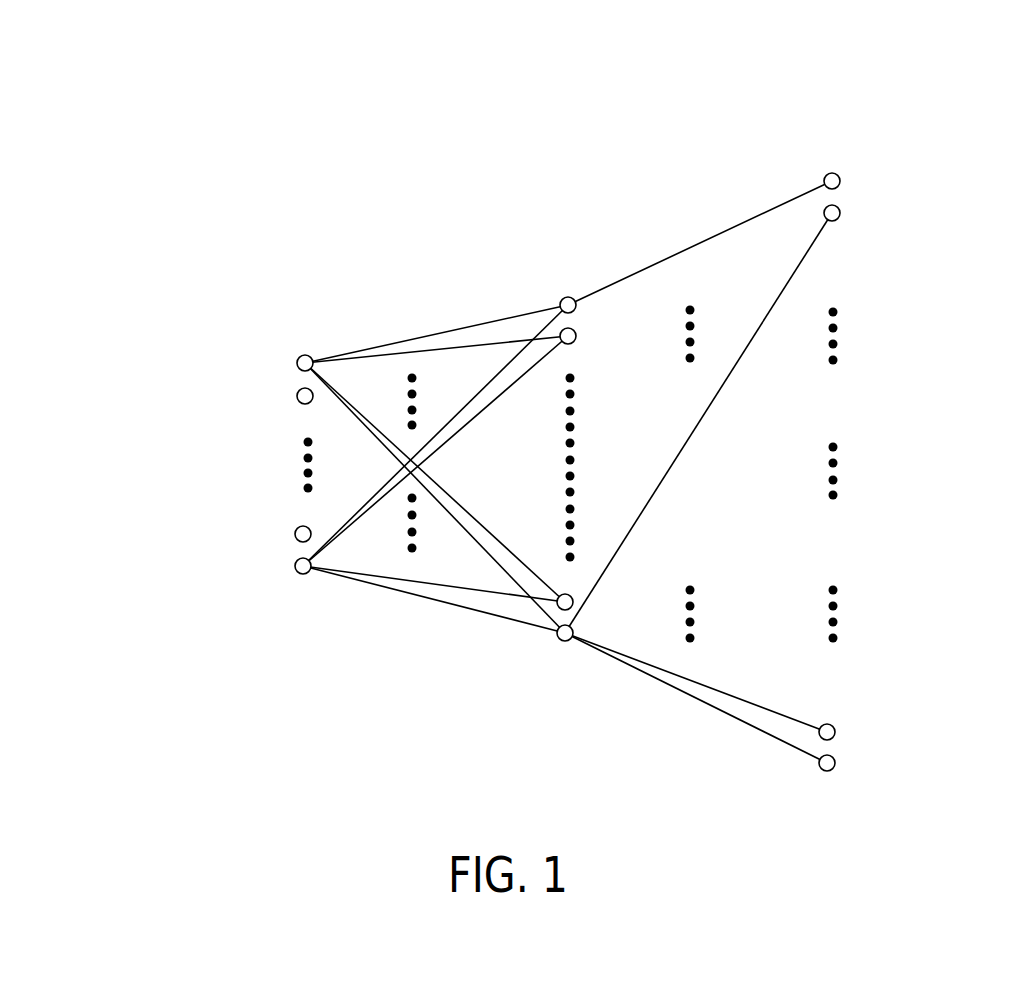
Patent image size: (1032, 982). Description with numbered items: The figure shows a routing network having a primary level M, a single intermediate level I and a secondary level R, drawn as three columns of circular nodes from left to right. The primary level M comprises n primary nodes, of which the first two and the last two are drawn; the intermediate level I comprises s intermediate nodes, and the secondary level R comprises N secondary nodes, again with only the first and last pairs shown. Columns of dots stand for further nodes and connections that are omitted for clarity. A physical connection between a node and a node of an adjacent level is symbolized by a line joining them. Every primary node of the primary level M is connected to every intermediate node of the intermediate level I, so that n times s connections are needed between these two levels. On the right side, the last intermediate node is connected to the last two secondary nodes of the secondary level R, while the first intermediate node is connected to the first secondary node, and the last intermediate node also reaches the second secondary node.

The primary level M is at (307, 134).
The intermediate level I is at (569, 139).
The secondary level R is at (833, 126).